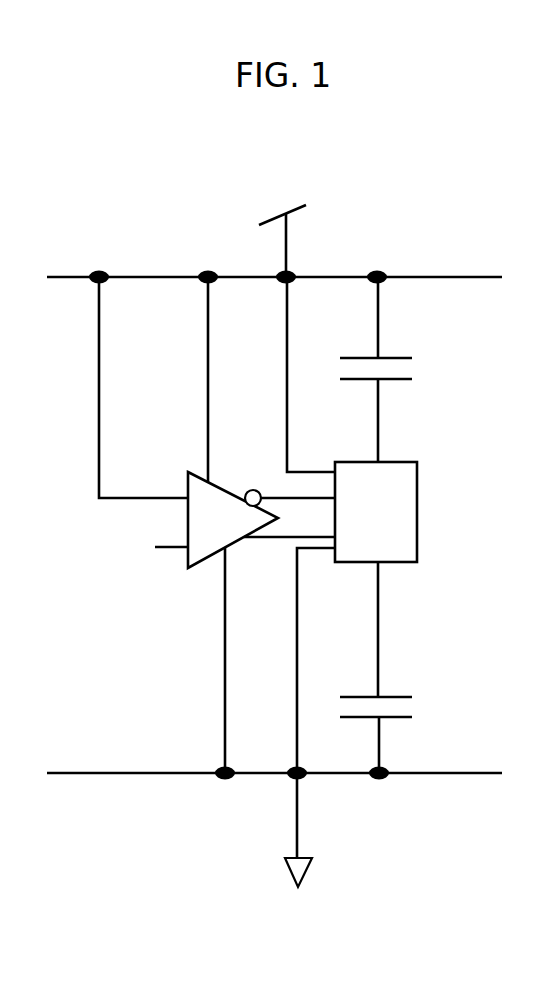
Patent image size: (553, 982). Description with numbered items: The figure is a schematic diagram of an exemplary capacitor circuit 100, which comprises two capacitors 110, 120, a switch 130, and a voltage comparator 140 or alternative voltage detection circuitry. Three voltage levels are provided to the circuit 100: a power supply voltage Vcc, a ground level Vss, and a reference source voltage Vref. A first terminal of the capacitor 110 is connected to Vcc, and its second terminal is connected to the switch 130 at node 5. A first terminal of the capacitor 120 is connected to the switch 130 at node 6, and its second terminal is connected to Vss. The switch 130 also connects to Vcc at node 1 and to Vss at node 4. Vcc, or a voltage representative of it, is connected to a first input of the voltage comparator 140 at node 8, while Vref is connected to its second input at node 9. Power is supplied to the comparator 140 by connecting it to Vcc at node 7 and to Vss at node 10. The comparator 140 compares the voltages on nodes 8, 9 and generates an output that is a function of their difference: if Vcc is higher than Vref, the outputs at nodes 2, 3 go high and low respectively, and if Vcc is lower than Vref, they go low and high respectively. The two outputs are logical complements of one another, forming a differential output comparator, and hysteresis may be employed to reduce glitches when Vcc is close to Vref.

The capacitor circuit 100 is at (372, 204).
The capacitor 110 is at (405, 372).
The capacitor 120 is at (406, 703).
The switch 130 is at (354, 527).
The voltage comparator 140 is at (198, 527).
The node 1 is at (311, 374).
The node 2 is at (298, 483).
The node 3 is at (289, 521).
The node 4 is at (316, 660).
The node 5 is at (390, 369).
The node 6 is at (390, 629).
The node 7 is at (195, 379).
The node 8 is at (143, 387).
The node 9 is at (140, 538).
The node 10 is at (206, 660).